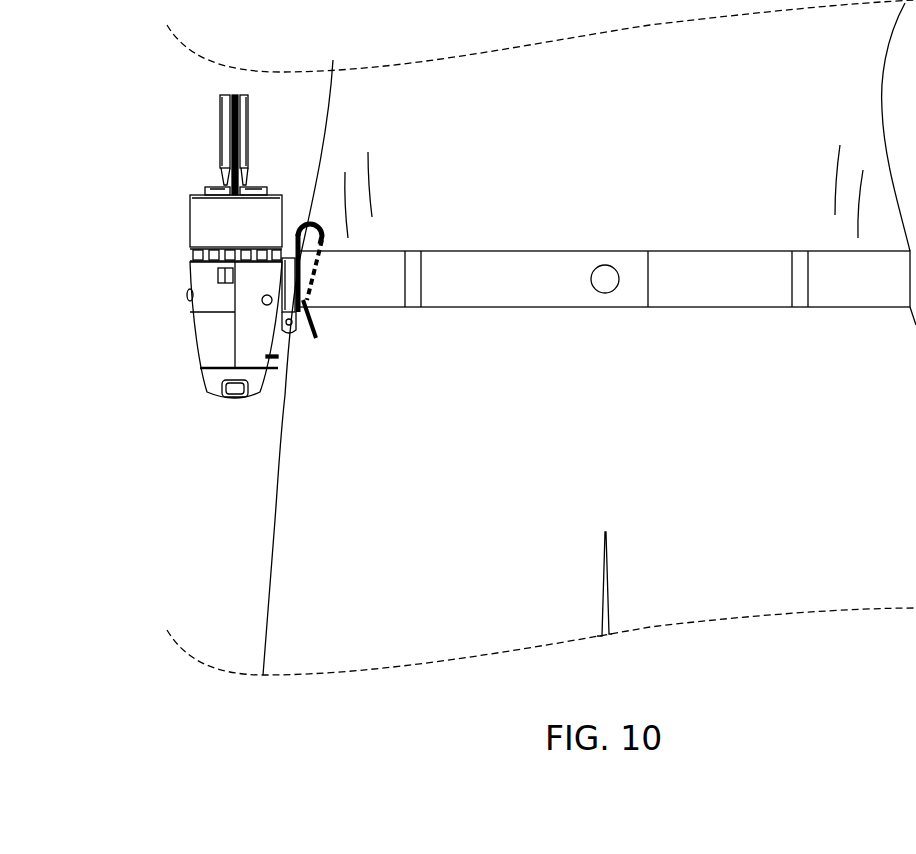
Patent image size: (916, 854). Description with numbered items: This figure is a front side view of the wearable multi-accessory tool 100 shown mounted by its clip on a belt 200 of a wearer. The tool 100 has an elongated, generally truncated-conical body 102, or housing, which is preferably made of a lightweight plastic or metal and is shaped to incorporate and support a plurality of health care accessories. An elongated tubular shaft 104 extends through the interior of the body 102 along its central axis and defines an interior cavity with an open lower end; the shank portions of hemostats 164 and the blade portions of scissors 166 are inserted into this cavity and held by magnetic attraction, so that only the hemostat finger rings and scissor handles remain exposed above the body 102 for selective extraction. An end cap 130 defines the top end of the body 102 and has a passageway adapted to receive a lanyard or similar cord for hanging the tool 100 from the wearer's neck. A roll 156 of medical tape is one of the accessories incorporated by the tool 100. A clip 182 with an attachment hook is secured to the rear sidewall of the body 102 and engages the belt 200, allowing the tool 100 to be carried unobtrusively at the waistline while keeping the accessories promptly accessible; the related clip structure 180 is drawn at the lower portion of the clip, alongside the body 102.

The wearable multi-accessory tool 100 is at (172, 155).
The body 102 is at (191, 340).
The elongated tubular shaft 104 is at (266, 183).
The end cap 130 is at (212, 396).
The roll of medical tape 156 is at (188, 222).
The hemostats 164 is at (307, 133).
The scissors 166 is at (243, 137).
The clip 180 is at (361, 259).
The clip 182 is at (328, 227).
The belt 200 is at (537, 262).